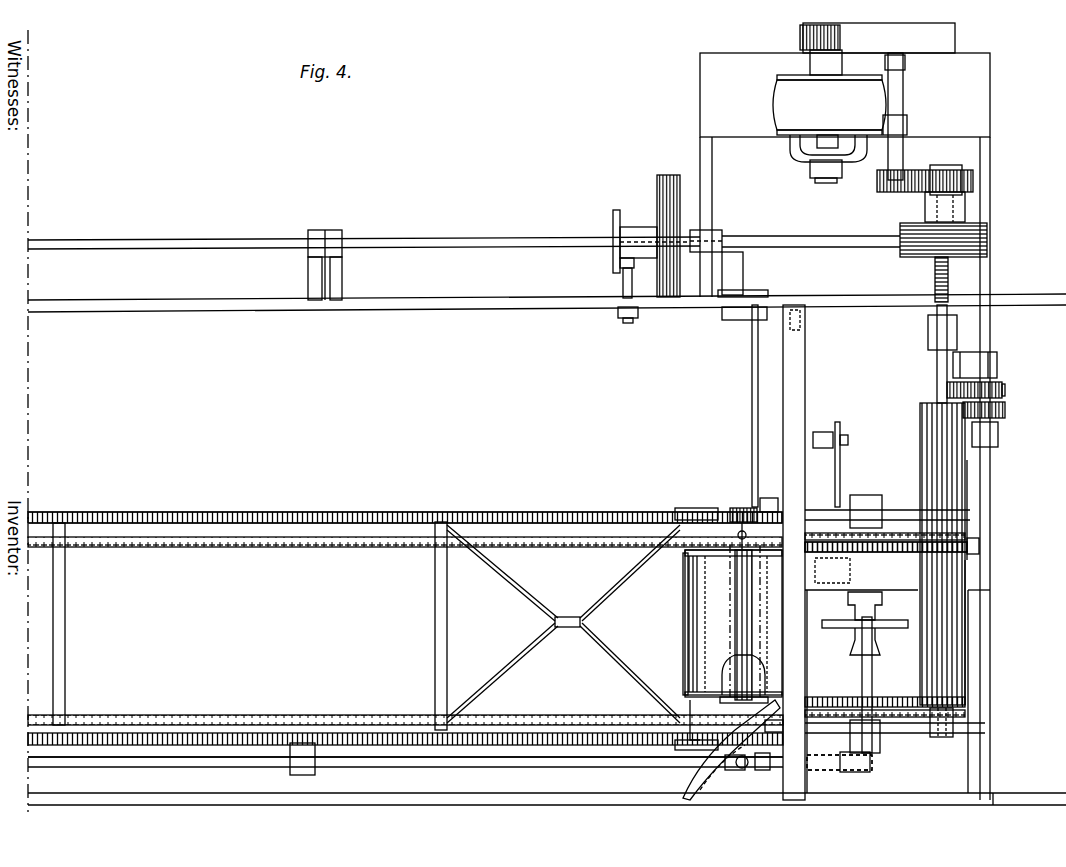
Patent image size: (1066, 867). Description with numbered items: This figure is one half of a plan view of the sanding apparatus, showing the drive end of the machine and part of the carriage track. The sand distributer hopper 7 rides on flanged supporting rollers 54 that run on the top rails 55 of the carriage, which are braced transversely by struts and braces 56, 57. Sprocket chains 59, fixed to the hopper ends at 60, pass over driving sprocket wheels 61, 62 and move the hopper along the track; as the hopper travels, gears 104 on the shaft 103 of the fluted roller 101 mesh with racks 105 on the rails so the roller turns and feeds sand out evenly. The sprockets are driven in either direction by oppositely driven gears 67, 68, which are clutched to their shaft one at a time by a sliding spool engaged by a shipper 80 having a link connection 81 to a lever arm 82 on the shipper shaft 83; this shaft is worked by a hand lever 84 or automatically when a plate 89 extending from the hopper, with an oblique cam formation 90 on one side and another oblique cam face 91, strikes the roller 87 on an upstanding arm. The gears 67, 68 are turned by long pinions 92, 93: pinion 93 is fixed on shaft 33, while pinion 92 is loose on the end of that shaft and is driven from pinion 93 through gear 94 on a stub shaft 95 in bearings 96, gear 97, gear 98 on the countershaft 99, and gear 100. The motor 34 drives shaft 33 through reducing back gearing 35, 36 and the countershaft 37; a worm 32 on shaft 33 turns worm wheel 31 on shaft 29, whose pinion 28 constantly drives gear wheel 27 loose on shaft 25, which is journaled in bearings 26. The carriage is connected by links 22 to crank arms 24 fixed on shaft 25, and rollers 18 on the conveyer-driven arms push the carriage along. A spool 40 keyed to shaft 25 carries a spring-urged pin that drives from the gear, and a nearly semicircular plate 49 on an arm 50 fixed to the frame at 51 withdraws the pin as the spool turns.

The sand distributer hopper 7 is at (733, 622).
The rollers 18 is at (825, 432).
The links 22 is at (752, 386).
The crank arms 24 is at (743, 273).
The shaft 25 is at (412, 248).
The bearings 26 is at (325, 237).
The gear wheel 27 is at (667, 175).
The pinion 28 is at (688, 237).
The shaft 29 is at (812, 240).
The worm wheel 31 is at (935, 262).
The worm 32 is at (987, 240).
The shaft 33 is at (937, 360).
The motor 34 is at (755, 690).
The reducing back gearing 35 is at (912, 192).
The reducing back gearing 36 is at (800, 42).
The countershaft 37 is at (903, 105).
The spool 40 is at (640, 227).
The nearly semicircular plate 49 is at (620, 262).
The arm 50 is at (623, 278).
The fixing point 51 is at (630, 322).
The flanged supporting rollers 54 is at (690, 508).
The top rails 55 is at (207, 512).
The struts 56 is at (435, 608).
The braces 57 is at (535, 598).
The sprocket chains 59 is at (108, 547).
The chain fastening 60 is at (740, 508).
The driving sprocket wheel 61 is at (898, 518).
The driving sprocket wheel 62 is at (905, 725).
The gear 67 is at (940, 697).
The gear 68 is at (965, 548).
The shipper 80 is at (880, 630).
The link connection 81 is at (872, 674).
The lever arm 82 is at (860, 770).
The shipper shaft 83 is at (558, 762).
The hand lever 84 is at (744, 679).
The roller 87 is at (742, 770).
The plate 89 is at (731, 750).
The oblique cam formation 90 is at (790, 715).
The oblique cam face 91 is at (690, 725).
The long pinion 92 is at (968, 609).
The long pinion 93 is at (955, 465).
The gear 94 is at (1005, 408).
The stub shaft 95 is at (990, 450).
The bearings 96 is at (985, 350).
The gear 97 is at (1000, 390).
The gear 98 is at (947, 390).
The countershaft 99 is at (968, 502).
The gear 100 is at (978, 553).
The fluted roller 101 is at (685, 625).
The shaft 103 is at (765, 510).
The gears 104 is at (720, 512).
The racks 105 is at (598, 512).